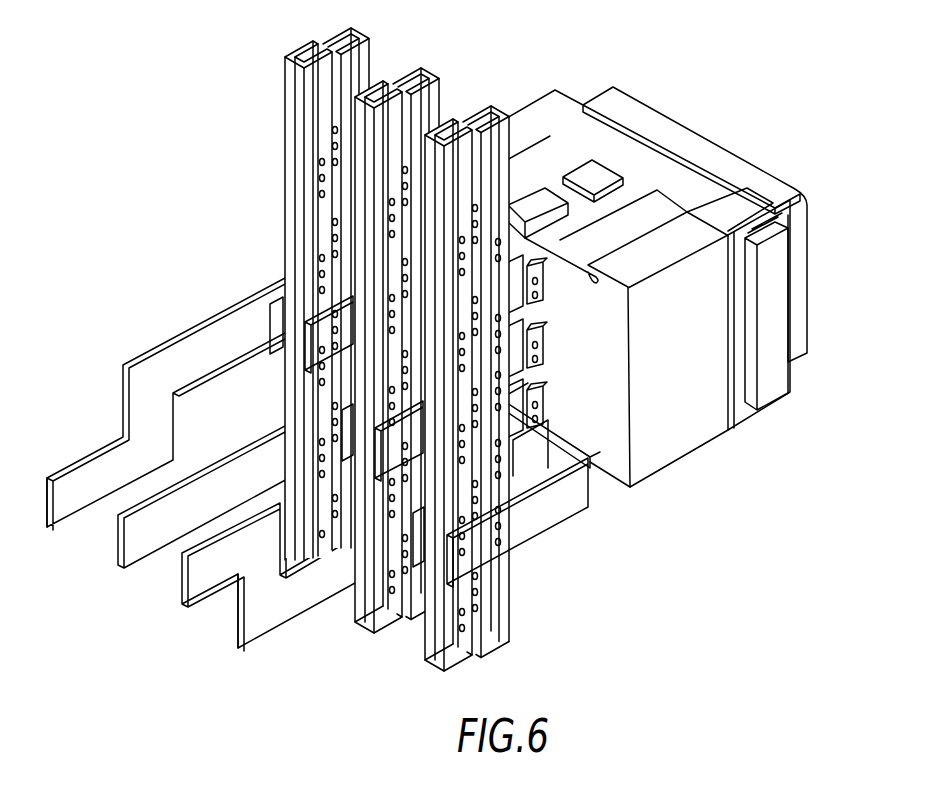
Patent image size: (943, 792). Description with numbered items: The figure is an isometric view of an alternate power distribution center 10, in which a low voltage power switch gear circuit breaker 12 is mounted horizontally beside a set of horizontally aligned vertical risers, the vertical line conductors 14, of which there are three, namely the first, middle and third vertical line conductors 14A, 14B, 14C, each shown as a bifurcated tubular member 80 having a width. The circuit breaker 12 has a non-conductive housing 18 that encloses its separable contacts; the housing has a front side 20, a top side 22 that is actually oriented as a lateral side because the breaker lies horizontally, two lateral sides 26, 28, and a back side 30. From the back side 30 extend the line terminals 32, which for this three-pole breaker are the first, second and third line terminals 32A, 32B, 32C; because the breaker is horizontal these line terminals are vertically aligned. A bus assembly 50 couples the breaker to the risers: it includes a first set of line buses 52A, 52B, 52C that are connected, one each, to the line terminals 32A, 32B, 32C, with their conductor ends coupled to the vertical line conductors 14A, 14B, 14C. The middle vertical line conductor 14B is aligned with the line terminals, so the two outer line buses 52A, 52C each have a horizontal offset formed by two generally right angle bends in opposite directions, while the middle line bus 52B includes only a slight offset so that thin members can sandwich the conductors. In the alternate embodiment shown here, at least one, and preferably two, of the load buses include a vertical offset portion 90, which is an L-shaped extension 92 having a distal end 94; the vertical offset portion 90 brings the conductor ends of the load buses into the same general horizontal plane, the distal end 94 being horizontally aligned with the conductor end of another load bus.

The power distribution center 10 is at (794, 102).
The circuit breaker 12 is at (706, 142).
The vertical line conductors 14 is at (389, 345).
The first vertical line conductor 14A is at (325, 289).
The middle vertical line conductor 14B is at (432, 90).
The third vertical line conductor 14C is at (506, 118).
The circuit breaker housing 18 is at (718, 414).
The front side 20 is at (790, 273).
The top side 22 is at (678, 442).
The lateral side 26 is at (620, 189).
The lateral side 28 is at (662, 484).
The back side 30 is at (616, 470).
The line terminals 32 is at (538, 214).
The first line terminal 32A is at (548, 291).
The second line terminal 32B is at (548, 345).
The third line terminal 32C is at (548, 404).
The bus assembly 50 is at (266, 252).
The first line bus 52A is at (312, 348).
The second line bus 52B is at (388, 444).
The third line bus 52C is at (562, 519).
The bifurcated tubular member 80 is at (304, 101).
The vertical offset portion 90 is at (122, 404).
The L-shaped extension 92 is at (90, 500).
The distal end 94 is at (43, 517).